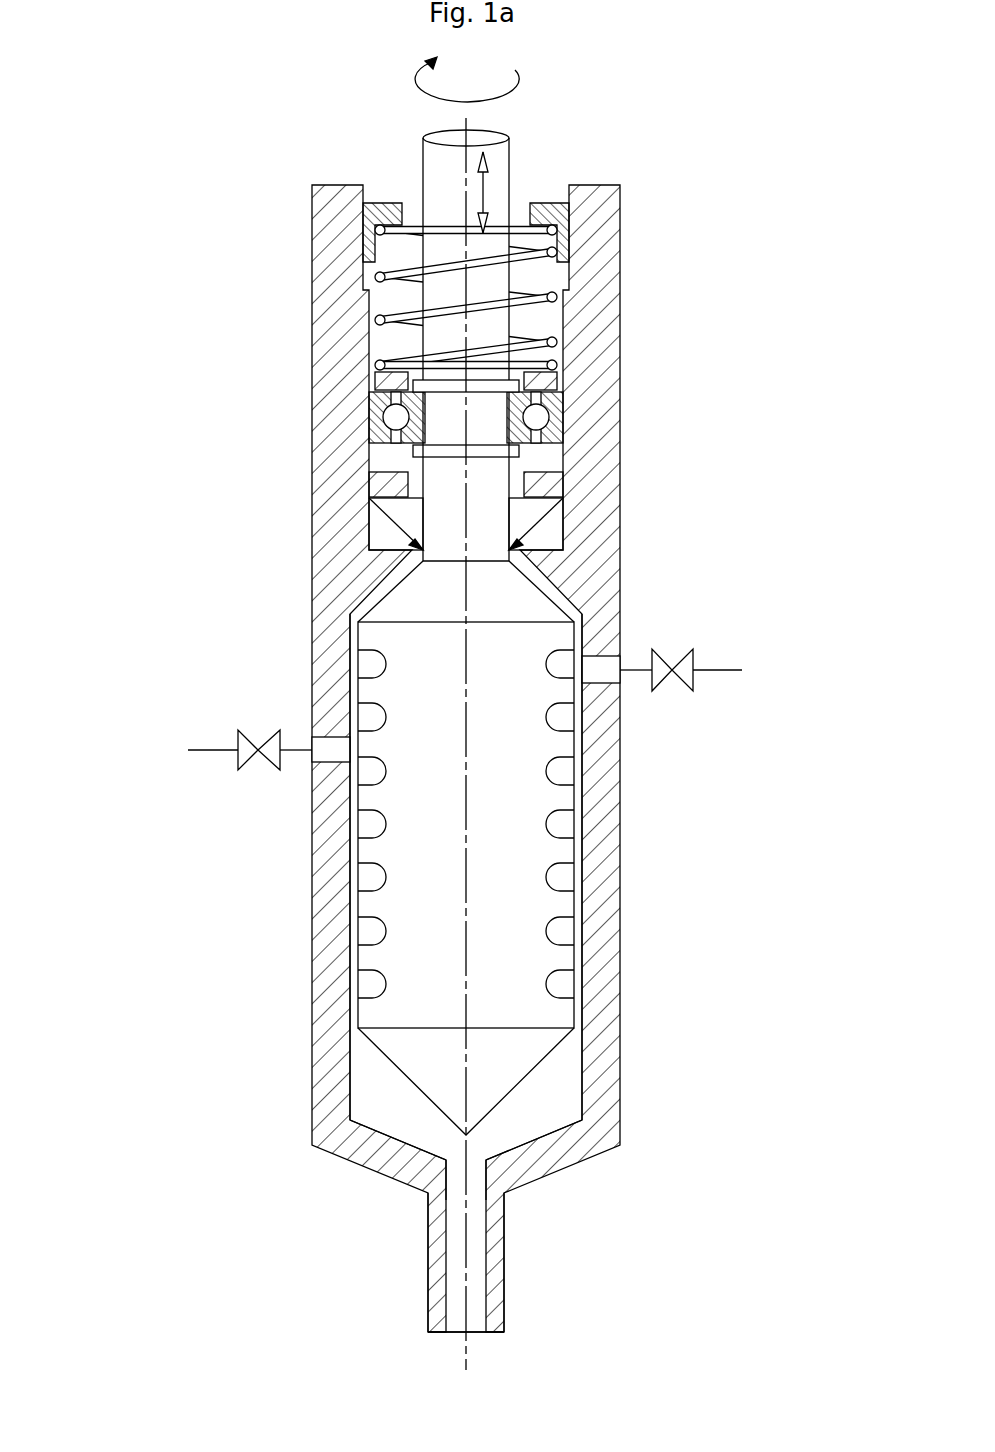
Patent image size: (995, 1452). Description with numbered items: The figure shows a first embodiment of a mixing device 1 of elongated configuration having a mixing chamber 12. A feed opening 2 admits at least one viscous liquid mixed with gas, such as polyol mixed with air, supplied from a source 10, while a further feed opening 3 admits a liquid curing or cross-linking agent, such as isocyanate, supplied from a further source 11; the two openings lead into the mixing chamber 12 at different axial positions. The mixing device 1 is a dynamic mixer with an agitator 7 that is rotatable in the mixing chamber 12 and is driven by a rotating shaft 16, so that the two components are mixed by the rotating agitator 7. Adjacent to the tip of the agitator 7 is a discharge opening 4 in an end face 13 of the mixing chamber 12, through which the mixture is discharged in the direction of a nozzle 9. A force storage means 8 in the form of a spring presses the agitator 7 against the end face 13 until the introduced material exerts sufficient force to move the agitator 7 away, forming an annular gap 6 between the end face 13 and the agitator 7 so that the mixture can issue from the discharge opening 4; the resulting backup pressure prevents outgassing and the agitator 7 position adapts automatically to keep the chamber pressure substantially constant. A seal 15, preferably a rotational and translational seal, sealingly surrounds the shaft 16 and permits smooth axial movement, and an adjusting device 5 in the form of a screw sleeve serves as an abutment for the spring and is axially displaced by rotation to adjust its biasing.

The mixing device 1 is at (662, 550).
The feed opening 2 is at (600, 668).
The further feed opening 3 is at (328, 753).
The discharge opening 4 is at (473, 1172).
The adjusting device 5 is at (375, 229).
The gap 6 is at (522, 1112).
The agitator 7 is at (522, 910).
The force storage means 8 is at (380, 322).
The nozzle 9 is at (506, 1259).
The source 10 is at (718, 670).
The further source 11 is at (213, 750).
The mixing chamber 12 is at (577, 967).
The end face 13 is at (533, 1140).
The seal 15 is at (385, 532).
The shaft 16 is at (437, 467).